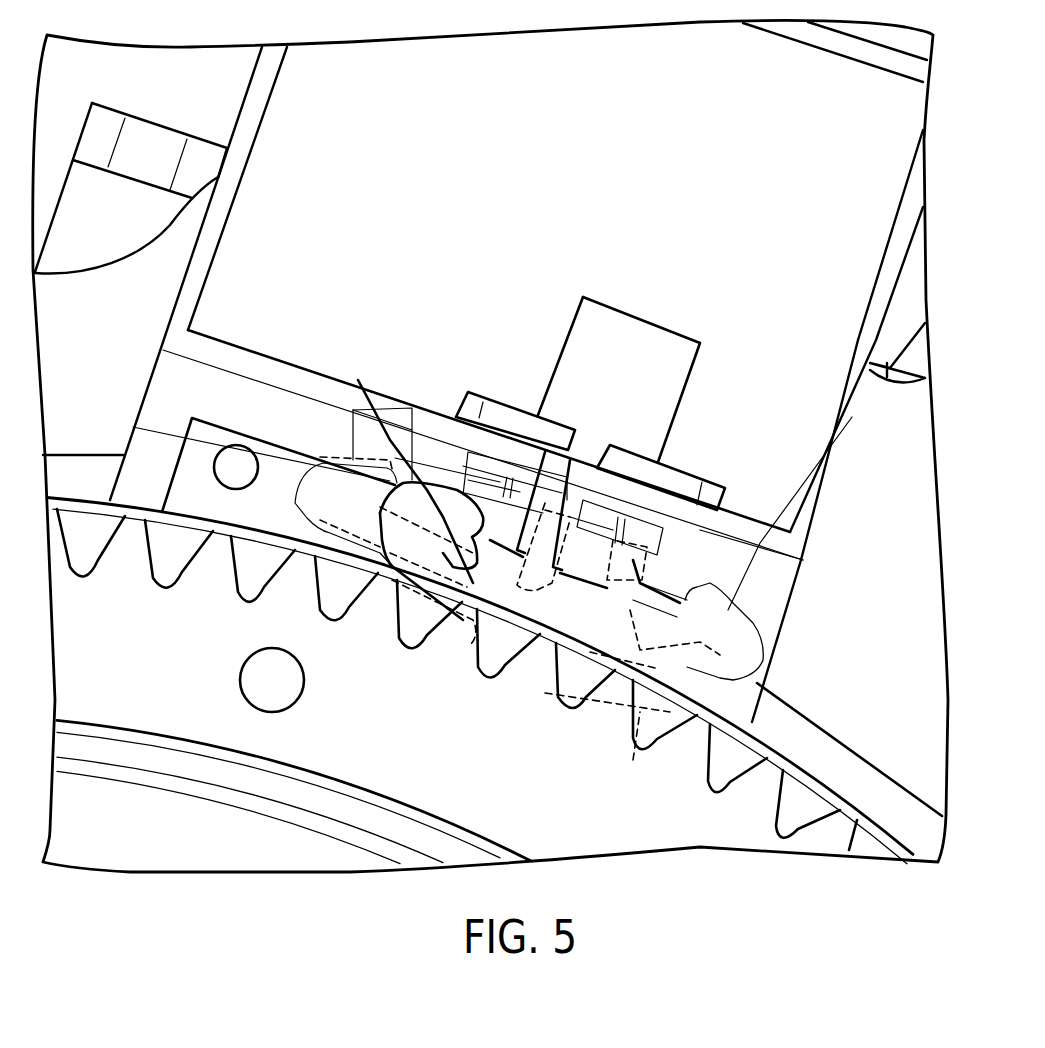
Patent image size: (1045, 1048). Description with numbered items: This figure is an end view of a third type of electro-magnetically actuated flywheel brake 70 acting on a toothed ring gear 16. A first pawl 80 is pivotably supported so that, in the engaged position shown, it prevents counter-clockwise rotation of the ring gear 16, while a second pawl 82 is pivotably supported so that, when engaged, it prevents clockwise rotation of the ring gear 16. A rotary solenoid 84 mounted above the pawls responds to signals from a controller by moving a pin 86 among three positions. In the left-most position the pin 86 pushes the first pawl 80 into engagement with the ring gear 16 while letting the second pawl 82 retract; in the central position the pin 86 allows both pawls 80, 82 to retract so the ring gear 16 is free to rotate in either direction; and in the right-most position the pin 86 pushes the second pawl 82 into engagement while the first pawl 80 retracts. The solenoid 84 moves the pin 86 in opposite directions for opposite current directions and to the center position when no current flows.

The ring gear 16 is at (782, 758).
The electro-magnetically actuated brake 70 is at (627, 232).
The first pawl 80 is at (295, 492).
The second pawl 82 is at (520, 630).
The rotary solenoid 84 is at (562, 348).
The pin 86 is at (358, 380).